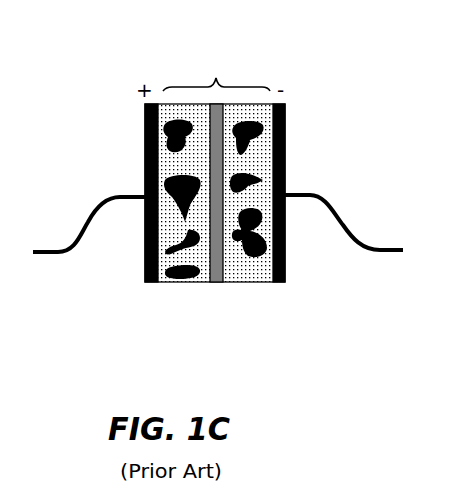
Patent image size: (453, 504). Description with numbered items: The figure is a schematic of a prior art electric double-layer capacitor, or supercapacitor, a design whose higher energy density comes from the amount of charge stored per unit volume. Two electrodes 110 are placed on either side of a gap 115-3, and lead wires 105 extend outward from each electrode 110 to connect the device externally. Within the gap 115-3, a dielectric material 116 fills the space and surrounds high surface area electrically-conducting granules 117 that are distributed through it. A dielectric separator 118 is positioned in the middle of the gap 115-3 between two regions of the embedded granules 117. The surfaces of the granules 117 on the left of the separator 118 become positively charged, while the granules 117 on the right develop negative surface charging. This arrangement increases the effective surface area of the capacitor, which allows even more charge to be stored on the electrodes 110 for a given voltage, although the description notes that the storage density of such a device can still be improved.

The lead wires 105 is at (83, 228).
The electrodes 110 is at (145, 145).
The gap 115-3 is at (216, 78).
The dielectric material 116 is at (260, 273).
The electrically-conducting granules 117 is at (247, 273).
The dielectric separator 118 is at (214, 276).